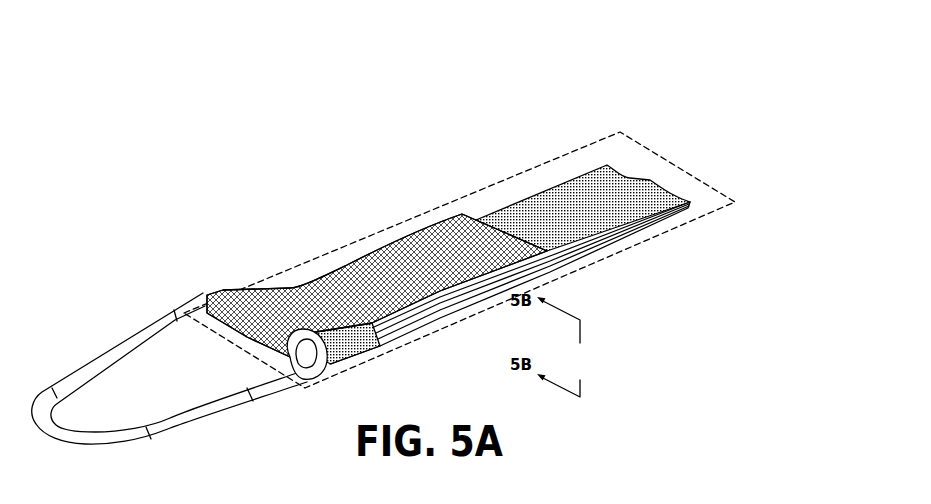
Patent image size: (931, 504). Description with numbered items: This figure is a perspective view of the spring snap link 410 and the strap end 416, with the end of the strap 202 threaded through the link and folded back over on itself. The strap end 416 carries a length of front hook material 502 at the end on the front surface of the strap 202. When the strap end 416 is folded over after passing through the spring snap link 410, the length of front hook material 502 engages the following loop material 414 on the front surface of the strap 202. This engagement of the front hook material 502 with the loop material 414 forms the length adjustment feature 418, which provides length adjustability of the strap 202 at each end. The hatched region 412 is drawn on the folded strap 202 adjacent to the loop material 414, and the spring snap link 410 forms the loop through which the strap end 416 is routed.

The strap 202 is at (583, 151).
The spring snap link 410 is at (100, 345).
The first pad (hook material) 412 is at (392, 272).
The loop material 414 is at (570, 203).
The strap end 416 is at (385, 169).
The length adjustment feature 418 is at (373, 362).
The length of front hook material 502 is at (535, 272).